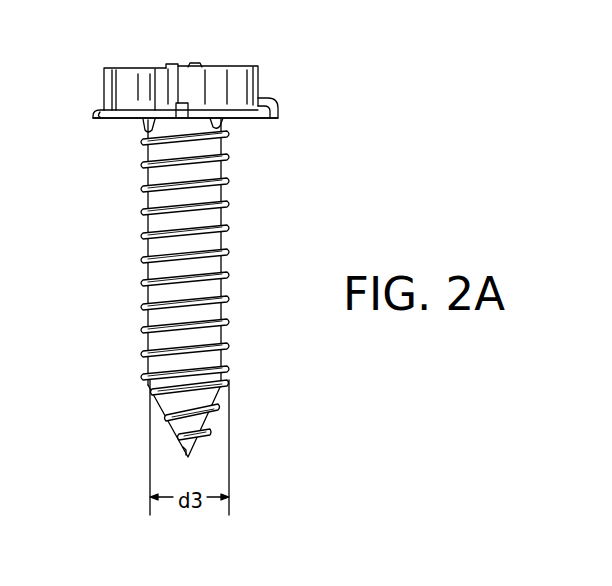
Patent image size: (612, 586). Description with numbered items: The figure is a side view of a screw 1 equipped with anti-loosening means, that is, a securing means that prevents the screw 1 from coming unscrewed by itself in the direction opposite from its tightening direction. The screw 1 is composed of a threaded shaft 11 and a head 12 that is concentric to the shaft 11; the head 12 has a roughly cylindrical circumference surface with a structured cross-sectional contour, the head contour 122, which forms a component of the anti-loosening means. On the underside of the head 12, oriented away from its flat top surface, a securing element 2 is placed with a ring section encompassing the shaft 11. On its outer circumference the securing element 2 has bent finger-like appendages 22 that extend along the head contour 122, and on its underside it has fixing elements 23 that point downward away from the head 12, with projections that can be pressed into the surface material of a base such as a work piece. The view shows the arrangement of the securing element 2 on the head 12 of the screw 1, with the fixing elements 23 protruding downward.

The screw 1 is at (117, 270).
The shaft 11 is at (232, 232).
The head 12 is at (130, 63).
The head contour 122 is at (215, 77).
The securing element 2 is at (242, 120).
The appendages 22 is at (266, 92).
The fixing elements 23 is at (140, 127).